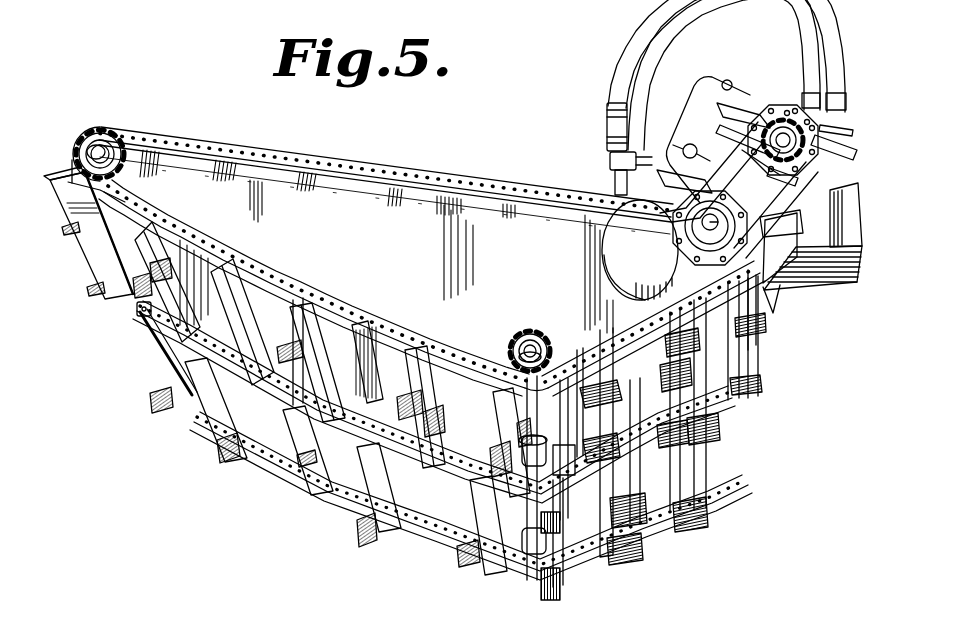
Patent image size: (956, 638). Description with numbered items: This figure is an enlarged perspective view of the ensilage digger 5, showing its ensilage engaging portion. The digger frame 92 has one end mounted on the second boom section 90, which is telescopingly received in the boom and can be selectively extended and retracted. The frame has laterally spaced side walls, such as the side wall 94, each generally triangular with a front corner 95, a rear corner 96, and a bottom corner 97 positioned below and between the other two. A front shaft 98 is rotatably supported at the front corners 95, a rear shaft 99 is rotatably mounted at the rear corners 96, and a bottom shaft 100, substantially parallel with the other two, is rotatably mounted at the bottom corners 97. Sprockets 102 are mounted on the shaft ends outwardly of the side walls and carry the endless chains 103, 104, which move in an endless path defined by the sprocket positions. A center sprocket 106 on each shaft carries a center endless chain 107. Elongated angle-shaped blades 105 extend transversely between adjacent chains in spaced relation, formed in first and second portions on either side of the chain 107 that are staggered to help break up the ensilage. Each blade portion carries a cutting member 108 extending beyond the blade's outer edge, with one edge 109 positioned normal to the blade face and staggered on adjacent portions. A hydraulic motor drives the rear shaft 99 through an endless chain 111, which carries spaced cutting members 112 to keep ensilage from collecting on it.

The ensilage digger 5 is at (74, 128).
The second boom section 90 is at (827, 277).
The digger frame 92 is at (693, 82).
The side wall 94 is at (483, 214).
The front corner 95 is at (145, 175).
The rear corner 96 is at (683, 277).
The bottom corner 97 is at (497, 410).
The front shaft 98 is at (103, 150).
The rear shaft 99 is at (708, 221).
The bottom shaft 100 is at (528, 336).
The sprocket 102 is at (130, 177).
The endless chain 103 is at (444, 547).
The endless chain 104 is at (327, 163).
The elongated blade 105 is at (430, 388).
The center sprocket 106 is at (567, 443).
The endless chain 107 is at (353, 433).
The cutting member 108 is at (640, 567).
The edge 109 is at (172, 430).
The endless chain 111 is at (784, 182).
The cutting member 112 is at (733, 86).